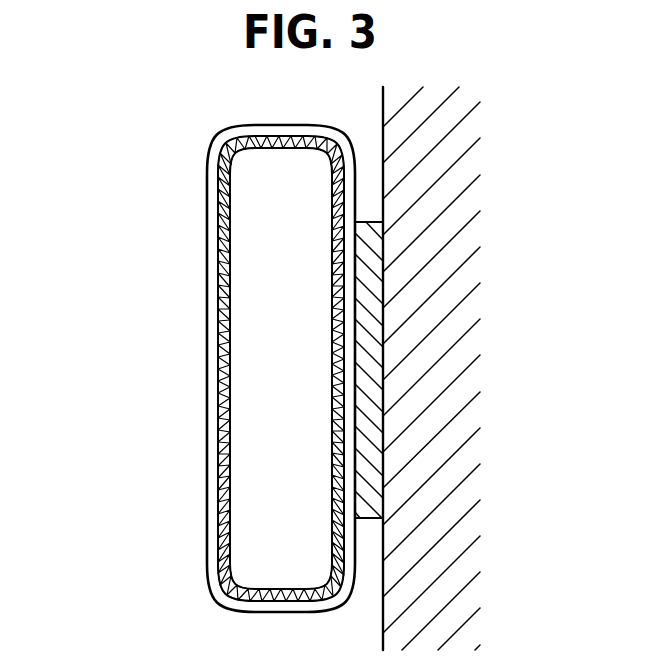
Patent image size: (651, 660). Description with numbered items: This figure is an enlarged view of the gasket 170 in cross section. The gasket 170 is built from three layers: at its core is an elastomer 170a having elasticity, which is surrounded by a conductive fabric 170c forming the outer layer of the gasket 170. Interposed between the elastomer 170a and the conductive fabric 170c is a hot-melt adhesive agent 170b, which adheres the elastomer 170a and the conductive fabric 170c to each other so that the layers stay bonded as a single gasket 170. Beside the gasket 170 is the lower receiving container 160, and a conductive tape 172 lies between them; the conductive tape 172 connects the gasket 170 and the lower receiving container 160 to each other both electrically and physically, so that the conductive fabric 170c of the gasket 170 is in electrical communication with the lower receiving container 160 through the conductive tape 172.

The lower receiving container 160 is at (447, 336).
The conductive tape 172 is at (370, 407).
The gasket 170 is at (203, 368).
The elastomer 170a is at (238, 281).
The hot-melt adhesive agent 170b is at (233, 320).
The conductive fabric 170c is at (208, 365).